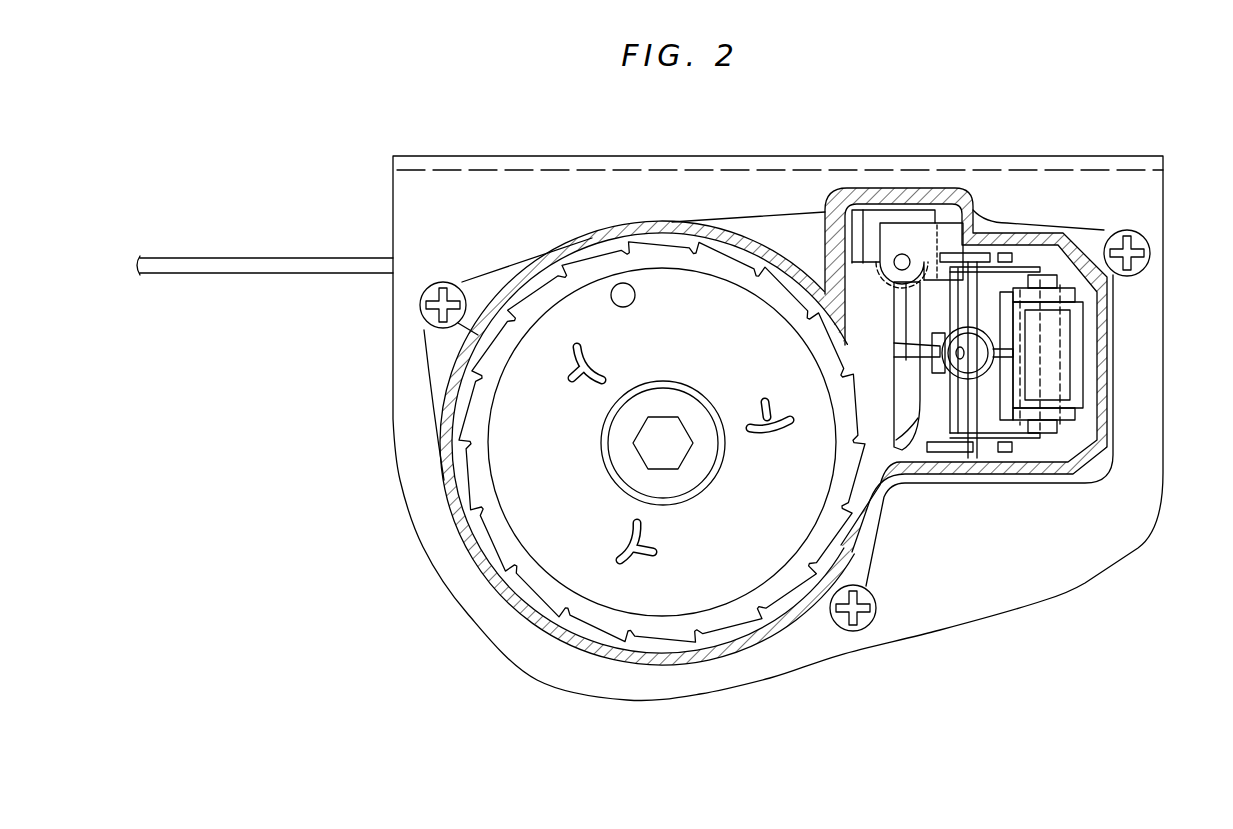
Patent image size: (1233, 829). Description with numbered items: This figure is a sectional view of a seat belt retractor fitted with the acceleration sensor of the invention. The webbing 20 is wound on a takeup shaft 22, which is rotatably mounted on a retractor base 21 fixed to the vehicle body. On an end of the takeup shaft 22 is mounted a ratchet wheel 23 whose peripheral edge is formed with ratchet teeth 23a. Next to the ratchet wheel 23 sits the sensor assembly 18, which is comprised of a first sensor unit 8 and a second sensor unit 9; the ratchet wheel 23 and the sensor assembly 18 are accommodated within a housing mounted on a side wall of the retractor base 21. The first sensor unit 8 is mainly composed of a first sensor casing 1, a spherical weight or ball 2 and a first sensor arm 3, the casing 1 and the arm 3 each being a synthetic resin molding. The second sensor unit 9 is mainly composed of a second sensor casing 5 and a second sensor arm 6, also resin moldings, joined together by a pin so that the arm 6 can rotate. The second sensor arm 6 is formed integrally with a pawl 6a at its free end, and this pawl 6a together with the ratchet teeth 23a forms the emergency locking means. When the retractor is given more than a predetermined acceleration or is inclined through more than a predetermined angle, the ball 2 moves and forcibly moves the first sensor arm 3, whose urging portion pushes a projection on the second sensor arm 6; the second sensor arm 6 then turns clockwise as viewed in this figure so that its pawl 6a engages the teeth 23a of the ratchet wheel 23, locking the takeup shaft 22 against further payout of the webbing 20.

The first sensor casing 1 is at (1084, 300).
The spherical weight or ball 2 is at (1000, 392).
The first sensor arm 3 is at (1067, 352).
The second sensor casing 5 is at (1090, 302).
The second sensor arm 6 is at (890, 307).
The pawl 6a is at (900, 442).
The first sensor unit 8 is at (922, 235).
The second sensor unit 9 is at (1048, 385).
The sensor assembly 18 is at (947, 235).
The webbing 20 is at (266, 262).
The retractor base 21 is at (485, 182).
The takeup shaft 22 is at (668, 444).
The ratchet wheel 23 is at (823, 481).
The ratchet teeth 23a is at (590, 640).